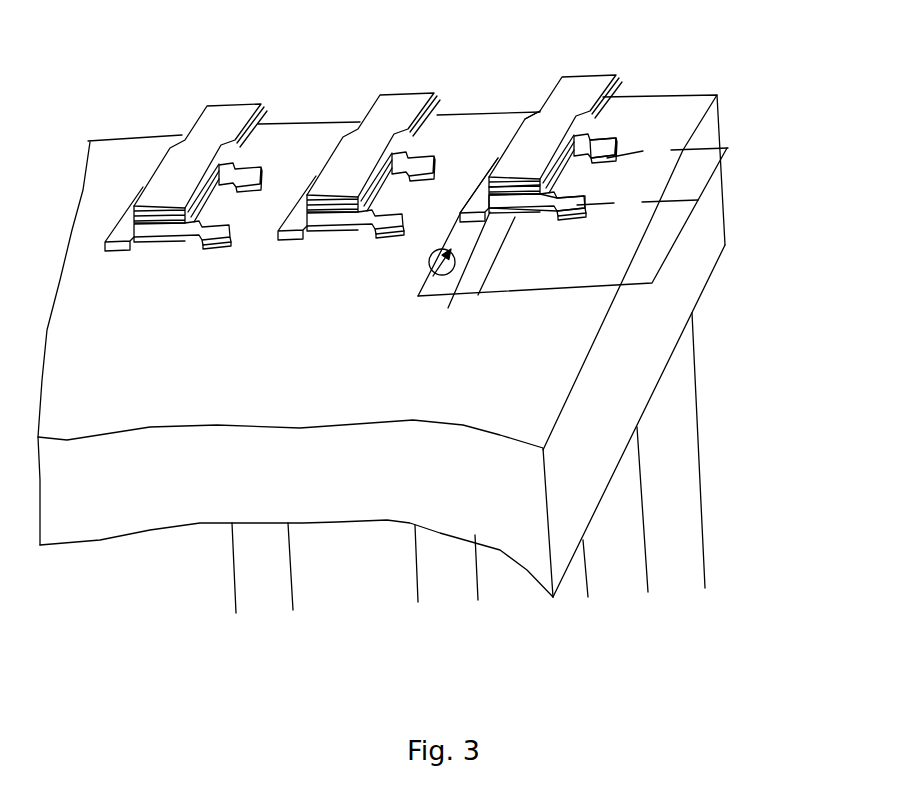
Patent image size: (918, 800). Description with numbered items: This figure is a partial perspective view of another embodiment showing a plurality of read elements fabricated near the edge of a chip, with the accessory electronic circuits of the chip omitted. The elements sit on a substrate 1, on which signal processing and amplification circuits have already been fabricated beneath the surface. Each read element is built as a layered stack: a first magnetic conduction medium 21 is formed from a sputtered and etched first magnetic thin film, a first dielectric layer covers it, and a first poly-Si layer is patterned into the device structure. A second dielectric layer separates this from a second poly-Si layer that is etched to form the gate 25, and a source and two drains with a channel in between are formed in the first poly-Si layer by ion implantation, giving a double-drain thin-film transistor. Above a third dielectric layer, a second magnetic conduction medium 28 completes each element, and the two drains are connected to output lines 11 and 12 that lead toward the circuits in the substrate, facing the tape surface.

The substrate 1 is at (643, 315).
The first magnetic conduction medium 21 is at (629, 94).
The second magnetic conduction medium 28 is at (543, 107).
The gate 25 is at (501, 177).
The first output line 11 is at (667, 150).
The second output line 12 is at (637, 204).